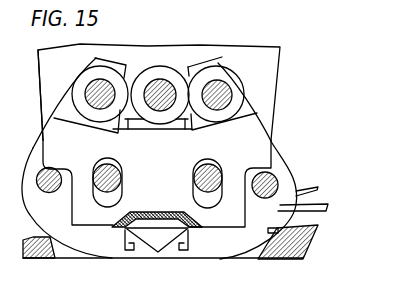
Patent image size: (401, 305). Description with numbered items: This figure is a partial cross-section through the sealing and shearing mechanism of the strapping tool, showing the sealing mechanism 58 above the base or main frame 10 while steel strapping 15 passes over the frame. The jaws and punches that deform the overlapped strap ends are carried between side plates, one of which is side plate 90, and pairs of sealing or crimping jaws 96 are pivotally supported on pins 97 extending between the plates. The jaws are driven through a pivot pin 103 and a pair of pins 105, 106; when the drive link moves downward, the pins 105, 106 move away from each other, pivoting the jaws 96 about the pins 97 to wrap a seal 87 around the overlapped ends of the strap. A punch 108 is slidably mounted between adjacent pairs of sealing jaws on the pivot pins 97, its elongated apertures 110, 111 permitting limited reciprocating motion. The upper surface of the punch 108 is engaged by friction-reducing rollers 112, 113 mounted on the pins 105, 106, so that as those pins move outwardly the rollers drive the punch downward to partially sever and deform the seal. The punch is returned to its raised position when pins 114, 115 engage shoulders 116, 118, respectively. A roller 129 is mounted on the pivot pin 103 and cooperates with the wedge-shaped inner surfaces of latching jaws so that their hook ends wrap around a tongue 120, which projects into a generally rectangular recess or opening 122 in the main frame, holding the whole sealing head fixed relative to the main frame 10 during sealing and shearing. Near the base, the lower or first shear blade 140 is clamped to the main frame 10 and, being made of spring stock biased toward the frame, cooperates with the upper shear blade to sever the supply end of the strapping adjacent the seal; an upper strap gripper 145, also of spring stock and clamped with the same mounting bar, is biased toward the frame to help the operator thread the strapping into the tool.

The main frame 10 is at (290, 264).
The steel strapping 15 is at (164, 212).
The sealing mechanism 58 is at (282, 76).
The seal 87 is at (201, 221).
The side plate 90 is at (39, 61).
The sealing or crimping jaws 96 is at (33, 148).
The pins 97 is at (118, 177).
The pivot pin 103 is at (162, 80).
The pin 105 is at (95, 102).
The pin 106 is at (221, 106).
The punch 108 is at (185, 156).
The elongated aperture 110 is at (116, 163).
The elongated aperture 111 is at (217, 165).
The friction-reducing roller 112 is at (226, 82).
The friction-reducing roller 113 is at (83, 77).
The pin 114 is at (46, 188).
The pin 115 is at (262, 191).
The shoulder 116 is at (57, 168).
The shoulder 118 is at (273, 143).
The tongue 120 is at (166, 247).
The recess or opening 122 is at (58, 257).
The roller 129 is at (138, 61).
The lower or first shear blade 140 is at (329, 205).
The upper strap gripper 145 is at (319, 188).